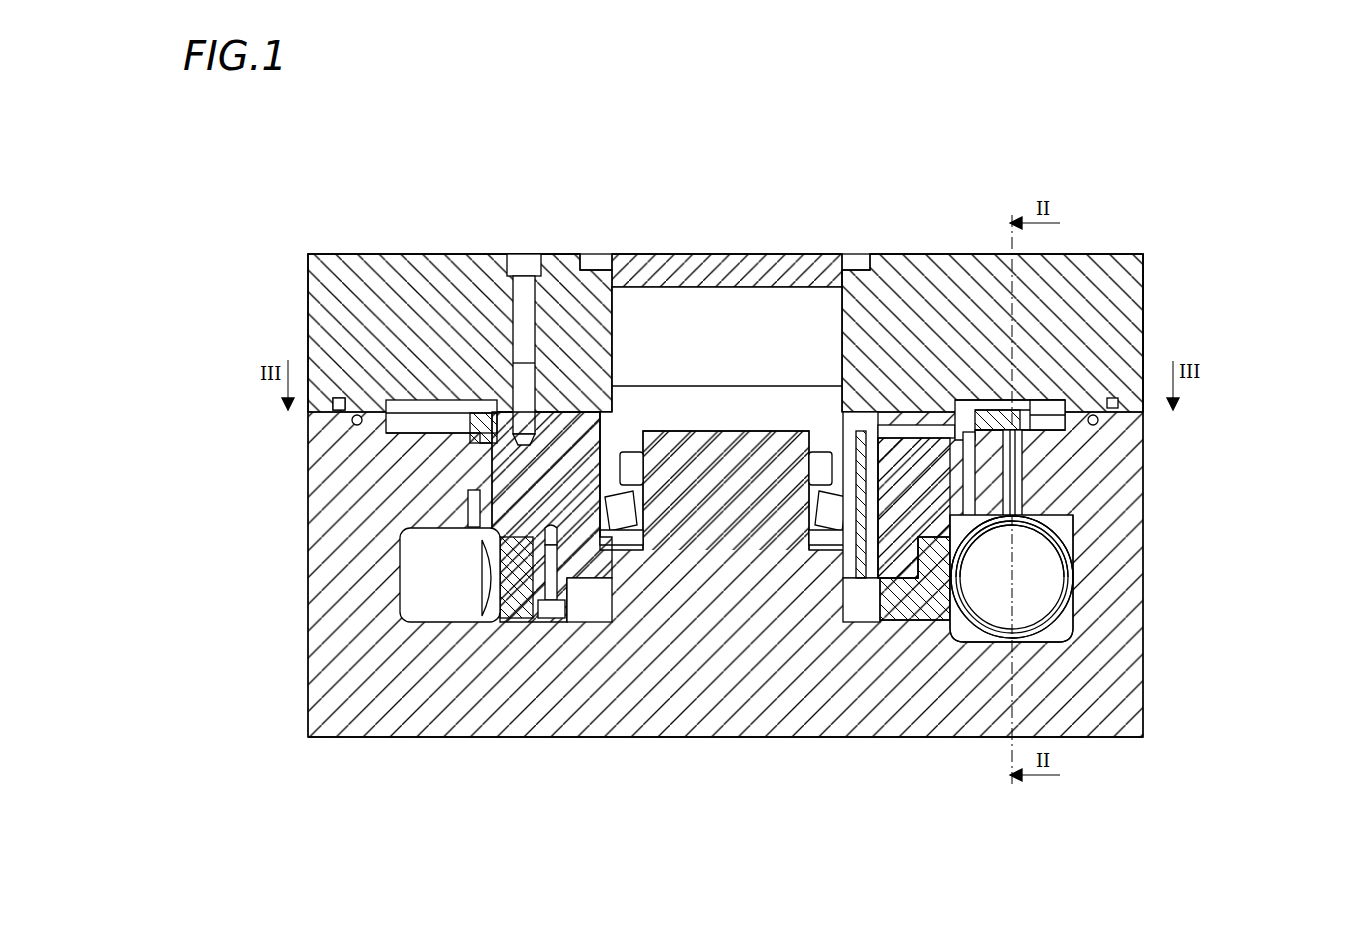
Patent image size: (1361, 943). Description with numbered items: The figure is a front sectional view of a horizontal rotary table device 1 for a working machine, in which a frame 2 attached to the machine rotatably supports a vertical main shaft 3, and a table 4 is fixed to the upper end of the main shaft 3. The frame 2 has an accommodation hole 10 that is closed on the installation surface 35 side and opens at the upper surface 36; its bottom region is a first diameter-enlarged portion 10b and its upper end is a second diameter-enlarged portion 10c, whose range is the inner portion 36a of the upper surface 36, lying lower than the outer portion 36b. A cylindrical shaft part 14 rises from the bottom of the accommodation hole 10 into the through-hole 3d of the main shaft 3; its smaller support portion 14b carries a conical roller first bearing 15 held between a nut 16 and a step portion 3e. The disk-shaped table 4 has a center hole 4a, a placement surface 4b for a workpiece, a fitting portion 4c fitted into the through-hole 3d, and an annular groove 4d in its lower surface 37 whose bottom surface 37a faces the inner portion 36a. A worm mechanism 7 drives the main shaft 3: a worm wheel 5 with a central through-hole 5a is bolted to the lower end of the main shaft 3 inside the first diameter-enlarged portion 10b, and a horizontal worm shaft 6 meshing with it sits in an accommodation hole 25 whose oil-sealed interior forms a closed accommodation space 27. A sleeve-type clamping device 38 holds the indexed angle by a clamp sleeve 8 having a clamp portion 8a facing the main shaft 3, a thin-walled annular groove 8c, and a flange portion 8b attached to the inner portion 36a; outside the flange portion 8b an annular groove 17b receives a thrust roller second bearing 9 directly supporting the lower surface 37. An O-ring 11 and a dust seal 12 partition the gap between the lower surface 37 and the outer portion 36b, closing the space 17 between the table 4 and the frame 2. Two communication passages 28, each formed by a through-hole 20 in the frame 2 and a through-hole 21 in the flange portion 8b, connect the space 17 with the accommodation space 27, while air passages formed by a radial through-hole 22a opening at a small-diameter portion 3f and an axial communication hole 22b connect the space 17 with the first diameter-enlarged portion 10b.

The rotary table device 1 is at (1155, 209).
The frame 2 is at (1143, 728).
The main shaft 3 is at (548, 410).
The through-hole 3d is at (612, 410).
The step portion 3e is at (605, 625).
The small-diameter portion 3f is at (495, 410).
The table 4 is at (1143, 254).
The center hole 4a is at (842, 380).
The placement surface 4b is at (310, 254).
The fitting portion 4c is at (840, 300).
The annular groove 4d is at (1088, 254).
The worm wheel 5 is at (945, 620).
The through-hole 5a is at (551, 620).
The worm shaft 6 is at (1000, 640).
The worm mechanism 7 is at (947, 673).
The clamp sleeve 8 is at (1060, 585).
The clamp portion 8a is at (1064, 577).
The flange portion 8b is at (1073, 545).
The annular groove 8c is at (1068, 562).
The second bearing 9 is at (1055, 400).
The accommodation hole 10 is at (460, 510).
The first diameter-enlarged portion 10b is at (405, 572).
The second diameter-enlarged portion 10c is at (390, 440).
The O-ring 11 is at (1143, 297).
The dust seal 12 is at (1143, 372).
The shaft part 14 is at (733, 268).
The support portion 14b is at (762, 386).
The first bearing 15 is at (787, 320).
The nut 16 is at (640, 430).
The space 17 is at (987, 400).
The annular groove 17b is at (400, 400).
The through-hole 20 is at (1022, 470).
The through-hole 21 is at (1022, 455).
The through-hole 22a is at (900, 438).
The communication hole 22b is at (885, 438).
The accommodation hole for a worm shaft 25 is at (1073, 625).
The accommodation space 27 is at (1150, 608).
The communication passage 28 is at (1174, 473).
The installation surface 35 is at (1115, 737).
The upper surface 36 is at (275, 348).
The inner portion 36a is at (340, 398).
The outer portion 36b is at (357, 415).
The lower surface 37 is at (1148, 425).
The bottom surface 37a is at (1065, 430).
The clamping device 38 is at (1133, 577).